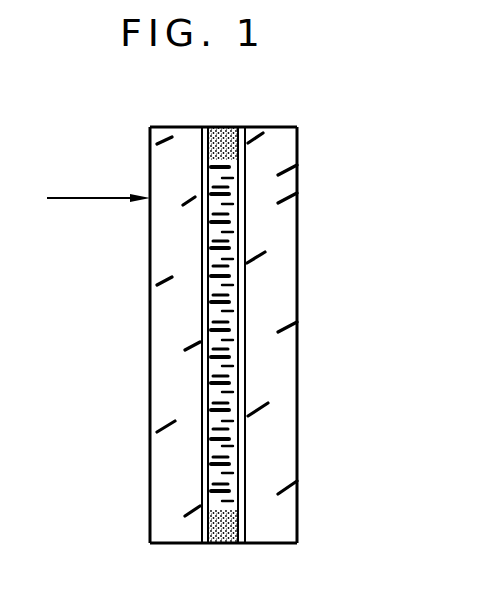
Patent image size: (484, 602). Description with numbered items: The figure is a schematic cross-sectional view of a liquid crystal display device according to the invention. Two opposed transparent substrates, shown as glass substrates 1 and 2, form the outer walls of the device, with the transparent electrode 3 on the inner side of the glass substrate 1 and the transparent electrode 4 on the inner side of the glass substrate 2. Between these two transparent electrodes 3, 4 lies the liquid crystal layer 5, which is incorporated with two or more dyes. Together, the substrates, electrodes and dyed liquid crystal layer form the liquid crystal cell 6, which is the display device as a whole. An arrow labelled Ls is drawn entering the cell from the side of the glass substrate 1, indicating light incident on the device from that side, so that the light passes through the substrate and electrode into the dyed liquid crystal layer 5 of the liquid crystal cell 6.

The glass substrate 1 is at (178, 127).
The glass substrate 2 is at (280, 167).
The transparent electrode 3 is at (204, 378).
The transparent electrode 4 is at (244, 310).
The liquid crystal layer 5 is at (233, 350).
The liquid crystal cell 6 is at (252, 318).
The incident light Ls is at (78, 201).